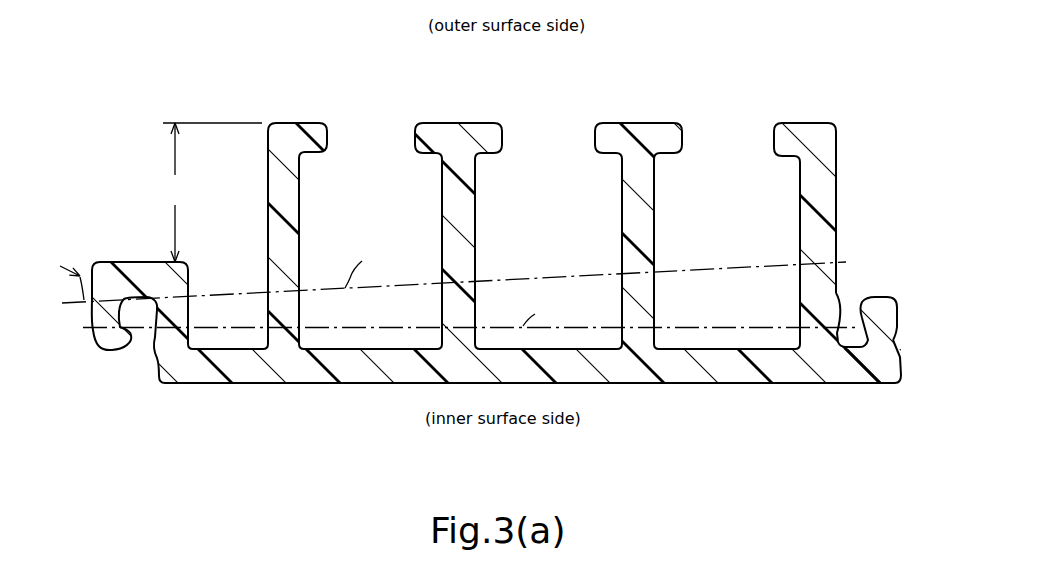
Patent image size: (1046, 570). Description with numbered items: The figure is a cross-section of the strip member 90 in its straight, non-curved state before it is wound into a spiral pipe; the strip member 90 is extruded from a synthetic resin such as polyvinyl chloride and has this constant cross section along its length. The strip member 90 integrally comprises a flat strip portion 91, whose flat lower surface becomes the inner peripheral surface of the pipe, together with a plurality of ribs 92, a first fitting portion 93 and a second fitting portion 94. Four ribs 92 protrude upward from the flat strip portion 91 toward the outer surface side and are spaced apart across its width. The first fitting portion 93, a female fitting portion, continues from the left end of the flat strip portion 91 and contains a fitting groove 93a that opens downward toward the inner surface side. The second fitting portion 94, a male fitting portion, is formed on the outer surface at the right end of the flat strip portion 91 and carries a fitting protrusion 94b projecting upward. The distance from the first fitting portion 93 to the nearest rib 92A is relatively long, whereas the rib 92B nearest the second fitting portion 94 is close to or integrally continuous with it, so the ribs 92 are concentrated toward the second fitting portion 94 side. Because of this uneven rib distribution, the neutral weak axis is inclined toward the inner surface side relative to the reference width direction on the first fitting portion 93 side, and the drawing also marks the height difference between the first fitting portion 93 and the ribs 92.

The strip member 90 is at (112, 133).
The flat strip portion 91 is at (372, 383).
The ribs 92 is at (647, 122).
The rib nearest the first fitting portion 92A is at (287, 122).
The rib nearest the second fitting portion 92B is at (836, 138).
The first fitting portion 93 is at (130, 262).
The fitting groove 93a is at (128, 353).
The second fitting portion 94 is at (900, 315).
The fitting protrusion 94b is at (880, 295).